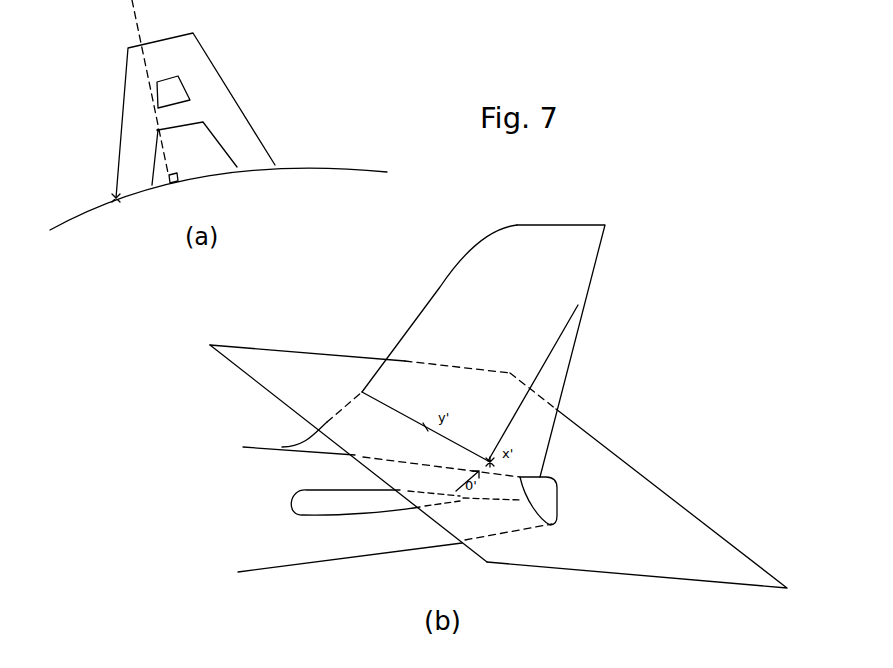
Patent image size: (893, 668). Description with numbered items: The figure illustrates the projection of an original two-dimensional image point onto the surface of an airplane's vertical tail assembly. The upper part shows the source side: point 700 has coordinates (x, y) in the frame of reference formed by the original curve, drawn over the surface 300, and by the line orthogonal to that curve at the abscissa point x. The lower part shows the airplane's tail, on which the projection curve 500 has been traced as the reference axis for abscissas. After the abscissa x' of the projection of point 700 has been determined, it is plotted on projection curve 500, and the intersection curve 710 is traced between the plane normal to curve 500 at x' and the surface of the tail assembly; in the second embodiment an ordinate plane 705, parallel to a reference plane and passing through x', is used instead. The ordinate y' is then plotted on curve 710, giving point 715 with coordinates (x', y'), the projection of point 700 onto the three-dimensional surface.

The aircraft fuselage surface 300 is at (320, 168).
The point 700 is at (160, 130).
The ordinate plane 705 is at (240, 357).
The intersection curve 710 is at (378, 392).
The projected point 715 is at (427, 424).
The projection curve 500 is at (545, 357).